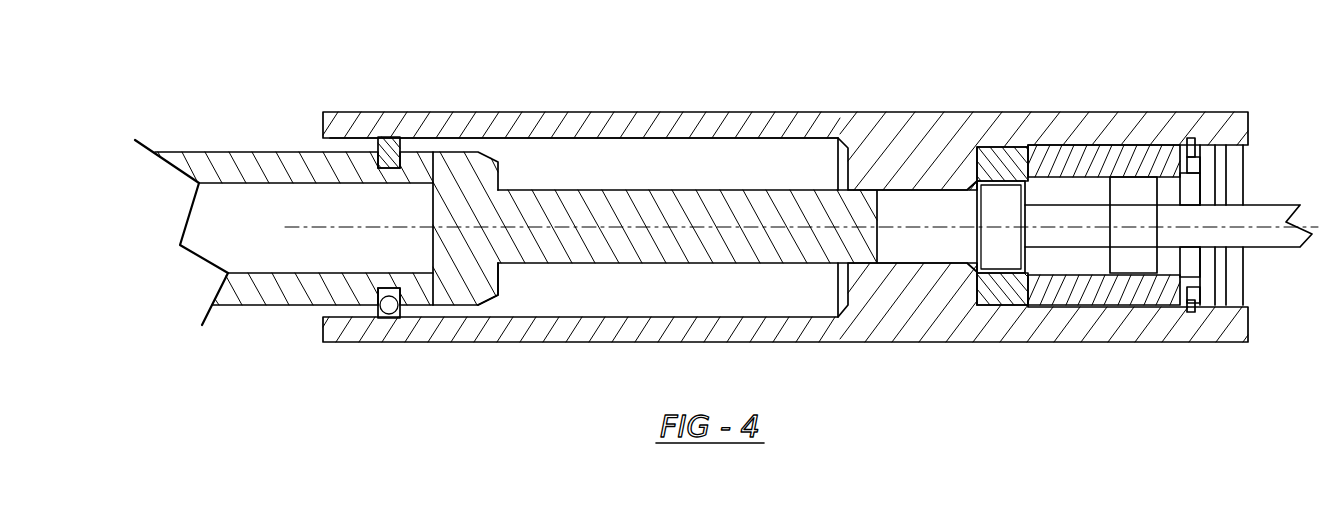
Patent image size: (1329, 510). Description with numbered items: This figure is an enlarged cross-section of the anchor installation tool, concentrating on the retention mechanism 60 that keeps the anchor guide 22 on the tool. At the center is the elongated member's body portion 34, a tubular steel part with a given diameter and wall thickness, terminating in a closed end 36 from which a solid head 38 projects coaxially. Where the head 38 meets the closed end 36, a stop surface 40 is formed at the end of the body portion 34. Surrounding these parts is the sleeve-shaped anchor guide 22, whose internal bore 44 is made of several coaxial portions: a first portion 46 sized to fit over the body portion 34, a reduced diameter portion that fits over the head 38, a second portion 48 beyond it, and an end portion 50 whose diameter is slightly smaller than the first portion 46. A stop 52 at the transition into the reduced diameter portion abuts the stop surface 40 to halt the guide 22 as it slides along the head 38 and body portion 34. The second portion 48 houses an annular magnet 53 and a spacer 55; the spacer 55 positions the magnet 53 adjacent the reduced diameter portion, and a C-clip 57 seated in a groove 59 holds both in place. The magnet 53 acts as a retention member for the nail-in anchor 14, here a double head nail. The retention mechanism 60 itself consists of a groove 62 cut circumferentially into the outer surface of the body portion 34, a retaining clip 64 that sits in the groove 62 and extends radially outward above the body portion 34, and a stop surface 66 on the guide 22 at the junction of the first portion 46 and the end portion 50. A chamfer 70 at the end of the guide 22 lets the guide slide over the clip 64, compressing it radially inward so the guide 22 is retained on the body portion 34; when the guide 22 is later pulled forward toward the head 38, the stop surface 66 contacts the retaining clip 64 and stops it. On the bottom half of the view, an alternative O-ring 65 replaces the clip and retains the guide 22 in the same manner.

The nail-in anchor 14 is at (1067, 243).
The anchor guide 22 is at (815, 110).
The body portion 34 is at (283, 293).
The closed end 36 is at (420, 263).
The head 38 is at (607, 240).
The stop surface 40 is at (500, 282).
The internal bore 44 is at (810, 148).
The first portion 46 is at (650, 150).
The second portion 48 is at (952, 196).
The end portion 50 is at (357, 148).
The stop 52 is at (848, 280).
The annular magnet 53 is at (1005, 150).
The spacer 55 is at (1118, 153).
The C-clip 57 is at (1193, 302).
The groove 59 is at (1193, 136).
The retention mechanism 60 is at (366, 166).
The groove 62 is at (413, 178).
The retaining clip 64 is at (389, 140).
The O-ring 65 is at (393, 318).
The stop surface 66 is at (377, 320).
The chamfer 70 is at (323, 143).